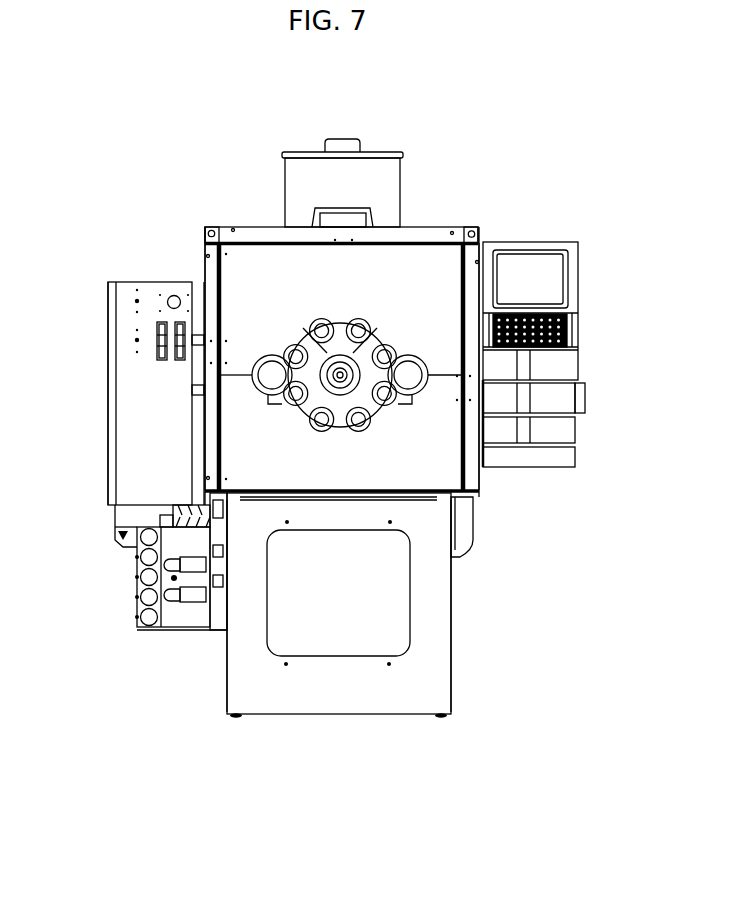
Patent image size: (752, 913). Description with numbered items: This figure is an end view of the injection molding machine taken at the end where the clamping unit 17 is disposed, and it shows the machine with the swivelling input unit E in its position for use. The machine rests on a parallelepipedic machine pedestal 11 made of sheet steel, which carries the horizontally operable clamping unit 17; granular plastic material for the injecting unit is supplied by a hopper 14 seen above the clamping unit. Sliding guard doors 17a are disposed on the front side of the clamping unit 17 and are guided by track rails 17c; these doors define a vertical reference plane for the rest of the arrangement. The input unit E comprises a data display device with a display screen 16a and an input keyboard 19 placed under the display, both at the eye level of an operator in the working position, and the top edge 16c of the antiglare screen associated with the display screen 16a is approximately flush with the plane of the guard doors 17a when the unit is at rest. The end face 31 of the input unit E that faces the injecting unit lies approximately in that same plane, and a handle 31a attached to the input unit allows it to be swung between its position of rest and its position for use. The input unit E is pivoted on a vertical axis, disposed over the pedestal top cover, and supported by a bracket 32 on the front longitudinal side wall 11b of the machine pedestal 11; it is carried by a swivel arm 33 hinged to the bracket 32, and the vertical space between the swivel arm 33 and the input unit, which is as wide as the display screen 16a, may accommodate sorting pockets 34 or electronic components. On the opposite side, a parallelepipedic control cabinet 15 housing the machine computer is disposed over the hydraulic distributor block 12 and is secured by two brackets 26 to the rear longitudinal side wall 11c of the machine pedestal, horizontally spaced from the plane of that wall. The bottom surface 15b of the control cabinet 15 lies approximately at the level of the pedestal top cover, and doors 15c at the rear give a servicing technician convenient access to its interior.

The machine pedestal 11 is at (335, 725).
The front longitudinal side wall 11b is at (452, 654).
The rear longitudinal side wall 11c is at (227, 688).
The hydraulic distributor block 12 is at (180, 612).
The hopper 14 is at (348, 196).
The control cabinet 15 is at (158, 429).
The bottom surface 15b is at (143, 505).
The doors 15c is at (108, 367).
The display screen 16a is at (546, 290).
The top edge 16c is at (568, 243).
The clamping unit 17 is at (432, 232).
The sliding guard doors 17a is at (207, 268).
The track rails 17c is at (209, 230).
The input keyboard 19 is at (578, 338).
The brackets 26 is at (135, 521).
The end face 31 is at (486, 428).
The handle 31a is at (586, 402).
The bracket 32 is at (465, 540).
The swivel arm 33 is at (558, 458).
The sorting pockets 34 is at (553, 400).
The input unit E is at (592, 264).